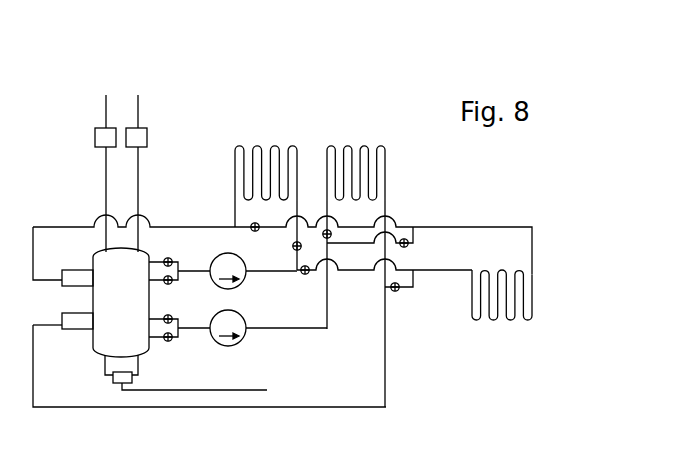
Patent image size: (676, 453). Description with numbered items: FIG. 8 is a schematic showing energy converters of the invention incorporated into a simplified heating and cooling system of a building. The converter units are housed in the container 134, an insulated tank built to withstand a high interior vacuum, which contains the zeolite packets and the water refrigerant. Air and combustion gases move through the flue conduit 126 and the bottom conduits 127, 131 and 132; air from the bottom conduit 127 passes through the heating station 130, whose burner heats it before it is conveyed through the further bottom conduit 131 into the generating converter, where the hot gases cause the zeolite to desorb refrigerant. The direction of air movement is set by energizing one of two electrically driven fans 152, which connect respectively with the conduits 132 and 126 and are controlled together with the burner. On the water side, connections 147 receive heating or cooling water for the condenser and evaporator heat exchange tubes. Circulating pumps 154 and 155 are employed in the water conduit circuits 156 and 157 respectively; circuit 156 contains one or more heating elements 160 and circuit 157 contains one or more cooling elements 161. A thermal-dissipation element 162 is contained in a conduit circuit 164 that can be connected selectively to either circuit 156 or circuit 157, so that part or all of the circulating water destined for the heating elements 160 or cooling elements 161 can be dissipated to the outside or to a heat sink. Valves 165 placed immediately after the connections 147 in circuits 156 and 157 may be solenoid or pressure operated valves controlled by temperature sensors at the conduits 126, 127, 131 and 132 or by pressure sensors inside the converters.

The flue conduit 126 is at (140, 176).
The bottom conduit 127 is at (139, 367).
The heating station 130 is at (116, 385).
The further bottom conduit 131 is at (103, 363).
The bottom conduit 132 is at (104, 180).
The container 134 is at (135, 309).
The connections 147 is at (166, 259).
The electrically driven fans 152 is at (95, 131).
The circulating pump 154 is at (250, 262).
The circulating pump 155 is at (248, 318).
The water conduit circuit 156 is at (216, 226).
The water conduit circuit 157 is at (325, 402).
The heating elements 160 is at (231, 147).
The cooling elements 161 is at (325, 147).
The thermal-dissipation element 162 is at (534, 321).
The conduit circuit 164 is at (452, 227).
The valves 165 is at (180, 263).